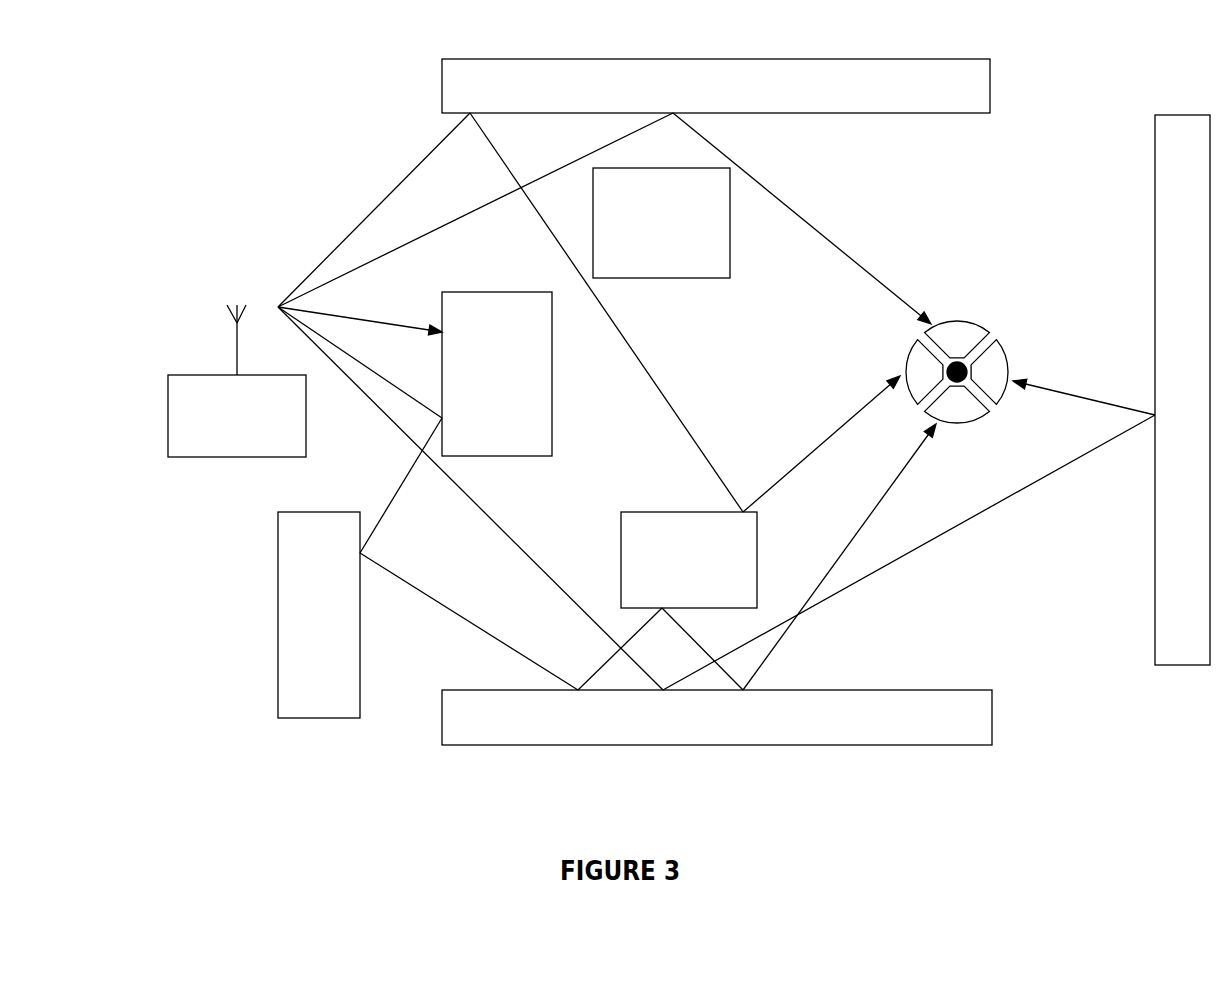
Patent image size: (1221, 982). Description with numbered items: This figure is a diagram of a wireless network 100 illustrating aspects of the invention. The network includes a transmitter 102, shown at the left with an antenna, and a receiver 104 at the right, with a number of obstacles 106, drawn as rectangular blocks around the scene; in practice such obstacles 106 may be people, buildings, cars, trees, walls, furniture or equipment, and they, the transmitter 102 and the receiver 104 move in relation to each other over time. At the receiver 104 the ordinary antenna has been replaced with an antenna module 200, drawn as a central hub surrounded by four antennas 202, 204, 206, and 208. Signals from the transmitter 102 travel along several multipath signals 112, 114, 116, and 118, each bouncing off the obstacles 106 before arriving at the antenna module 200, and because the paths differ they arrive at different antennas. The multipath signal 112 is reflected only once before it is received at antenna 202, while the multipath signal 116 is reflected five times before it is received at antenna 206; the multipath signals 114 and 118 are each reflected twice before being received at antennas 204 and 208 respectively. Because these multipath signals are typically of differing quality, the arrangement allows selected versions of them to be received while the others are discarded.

The wireless network 100 is at (241, 131).
The transmitter 102 is at (195, 374).
The receiver 104 is at (957, 318).
The obstacles 106 is at (855, 113).
The multipath signal 112 is at (417, 237).
The multipath signal 114 is at (408, 170).
The multipath signal 116 is at (357, 317).
The multipath signal 118 is at (483, 510).
The antenna module 200 is at (957, 371).
The antenna 202 is at (953, 323).
The antenna 204 is at (908, 348).
The antenna 206 is at (965, 425).
The antenna 208 is at (1010, 350).